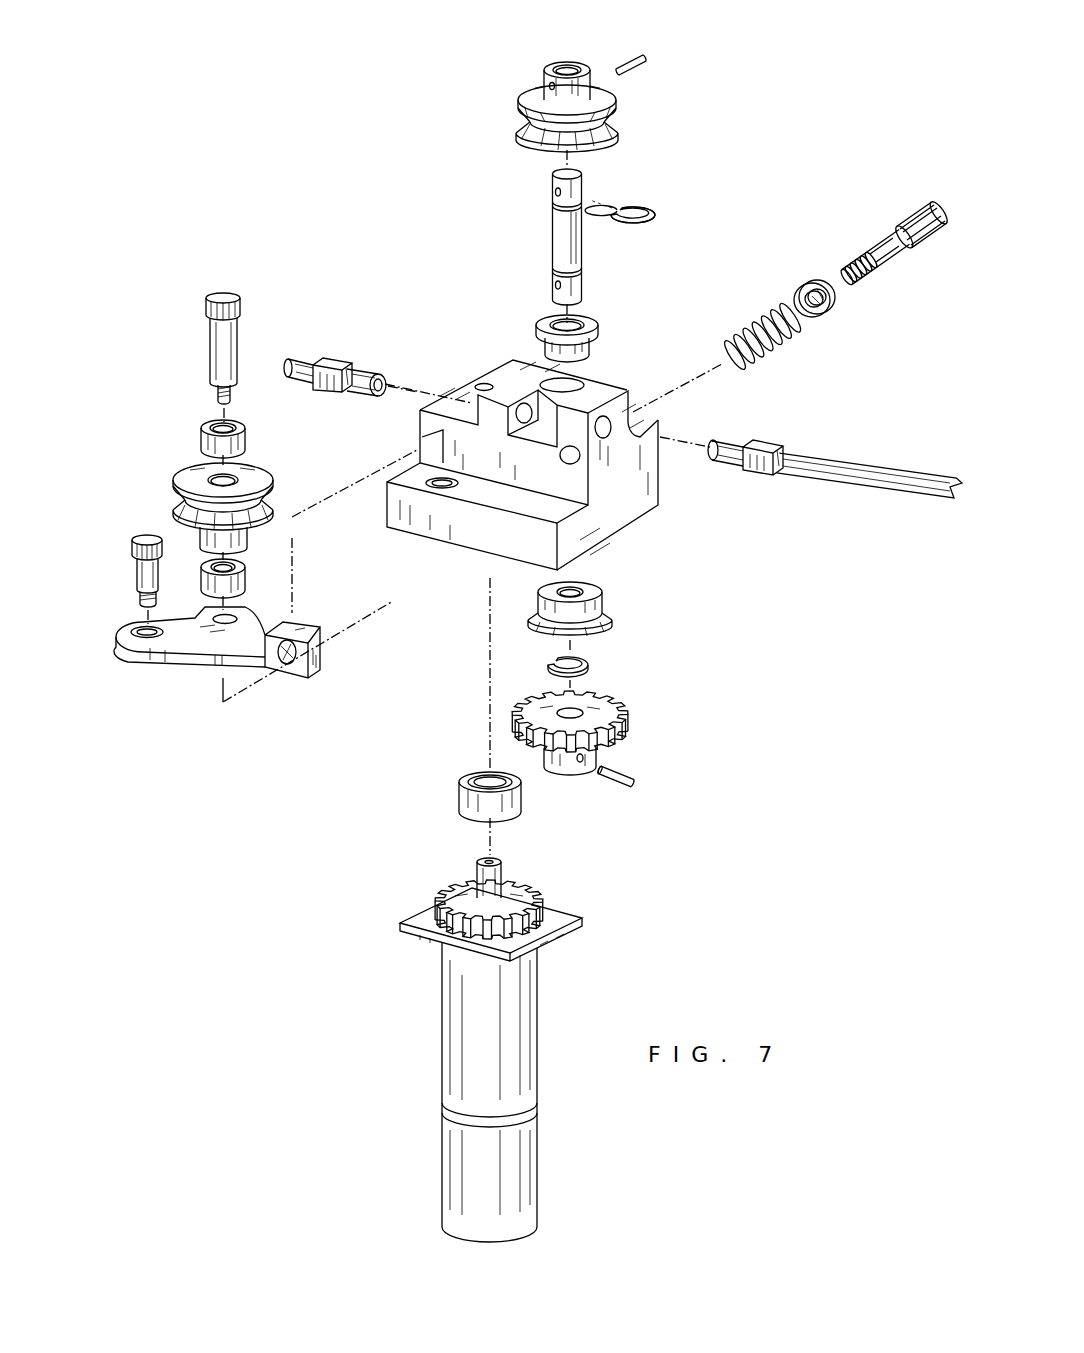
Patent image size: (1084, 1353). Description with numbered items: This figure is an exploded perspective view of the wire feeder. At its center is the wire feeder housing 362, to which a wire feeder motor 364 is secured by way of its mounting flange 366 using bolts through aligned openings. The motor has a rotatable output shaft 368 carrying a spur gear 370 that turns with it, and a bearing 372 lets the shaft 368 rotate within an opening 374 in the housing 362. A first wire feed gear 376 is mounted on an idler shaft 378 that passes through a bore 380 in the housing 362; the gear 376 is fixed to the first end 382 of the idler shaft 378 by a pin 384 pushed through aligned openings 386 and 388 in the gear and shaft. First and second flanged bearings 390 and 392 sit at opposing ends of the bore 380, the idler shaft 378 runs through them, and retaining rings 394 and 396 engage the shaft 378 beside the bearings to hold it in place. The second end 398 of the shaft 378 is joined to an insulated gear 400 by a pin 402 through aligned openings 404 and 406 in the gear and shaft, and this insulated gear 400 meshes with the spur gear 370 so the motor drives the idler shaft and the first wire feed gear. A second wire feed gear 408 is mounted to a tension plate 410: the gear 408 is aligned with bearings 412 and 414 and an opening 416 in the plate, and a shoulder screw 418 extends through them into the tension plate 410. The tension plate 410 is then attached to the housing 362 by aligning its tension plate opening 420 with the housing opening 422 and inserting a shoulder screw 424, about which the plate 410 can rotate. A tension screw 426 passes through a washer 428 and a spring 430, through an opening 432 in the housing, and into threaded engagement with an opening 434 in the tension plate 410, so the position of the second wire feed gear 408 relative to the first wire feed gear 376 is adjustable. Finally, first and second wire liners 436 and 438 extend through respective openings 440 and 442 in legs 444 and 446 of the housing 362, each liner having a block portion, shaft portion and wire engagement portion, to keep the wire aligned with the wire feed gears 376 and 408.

The wire feeder housing 362 is at (627, 512).
The wire feeder motor 364 is at (537, 1040).
The mounting flange 366 is at (582, 917).
The rotatable output shaft 368 is at (477, 878).
The spur gear 370 is at (437, 902).
The bearing 372 is at (457, 798).
The opening 374 is at (483, 383).
The first wire feed gear 376 is at (611, 125).
The idler shaft 378 is at (583, 230).
The bore 380 is at (550, 392).
The first end 382 is at (584, 182).
The pin 384 is at (631, 57).
The opening 386 is at (542, 81).
The opening 388 is at (553, 190).
The first flanged bearing 390 is at (593, 320).
The second flanged bearing 392 is at (602, 598).
The retaining ring 394 is at (648, 210).
The retaining ring 396 is at (590, 670).
The second end 398 is at (583, 280).
The insulated gear 400 is at (628, 720).
The pin 402 is at (628, 768).
The opening 404 is at (577, 763).
The opening 406 is at (553, 260).
The second wire feed gear 408 is at (273, 507).
The tension plate 410 is at (190, 657).
The bearing 412 is at (247, 432).
The bearing 414 is at (292, 539).
The opening 416 is at (233, 612).
The shoulder screw 418 is at (210, 343).
The tension plate opening 420 is at (115, 640).
The housing opening 422 is at (440, 488).
The shoulder screw 424 is at (110, 547).
The tension screw 426 is at (912, 253).
The washer 428 is at (833, 310).
The spring 430 is at (780, 347).
The opening 432 is at (575, 458).
The opening 434 is at (287, 660).
The first wire liner 436 is at (907, 505).
The second wire liner 438 is at (295, 345).
The opening 440 is at (613, 428).
The opening 442 is at (520, 422).
The leg 444 is at (592, 398).
The leg 446 is at (508, 393).